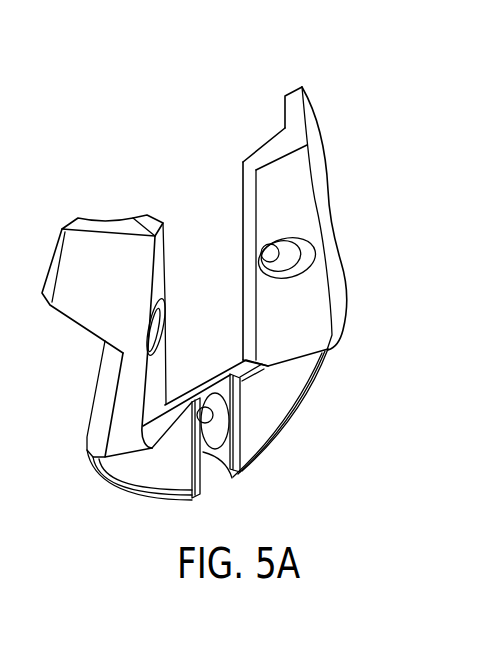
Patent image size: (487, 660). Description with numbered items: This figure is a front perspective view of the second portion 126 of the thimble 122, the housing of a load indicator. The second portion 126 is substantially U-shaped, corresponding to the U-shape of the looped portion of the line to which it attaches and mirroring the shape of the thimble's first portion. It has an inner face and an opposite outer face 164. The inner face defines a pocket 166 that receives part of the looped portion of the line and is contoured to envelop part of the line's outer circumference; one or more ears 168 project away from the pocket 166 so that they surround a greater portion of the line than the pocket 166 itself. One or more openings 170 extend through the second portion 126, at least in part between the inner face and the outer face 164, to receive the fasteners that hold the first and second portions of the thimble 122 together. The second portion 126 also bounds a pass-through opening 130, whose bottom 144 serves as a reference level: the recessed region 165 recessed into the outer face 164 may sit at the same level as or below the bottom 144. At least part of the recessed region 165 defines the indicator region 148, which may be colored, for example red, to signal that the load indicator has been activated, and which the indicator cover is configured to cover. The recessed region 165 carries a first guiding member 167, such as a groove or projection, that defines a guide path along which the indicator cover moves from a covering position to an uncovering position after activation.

The thimble 122 is at (313, 194).
The second portion 126 is at (358, 252).
The pass-through opening 130 is at (194, 197).
The bottom of the pass-through opening 144 is at (200, 383).
The indicator region 148 is at (266, 424).
The outer face 164 is at (291, 183).
The recessed region 165 is at (328, 393).
The pocket 166 is at (257, 116).
The first guiding member 167 is at (220, 455).
The ears 168 is at (298, 93).
The openings 170 is at (272, 253).